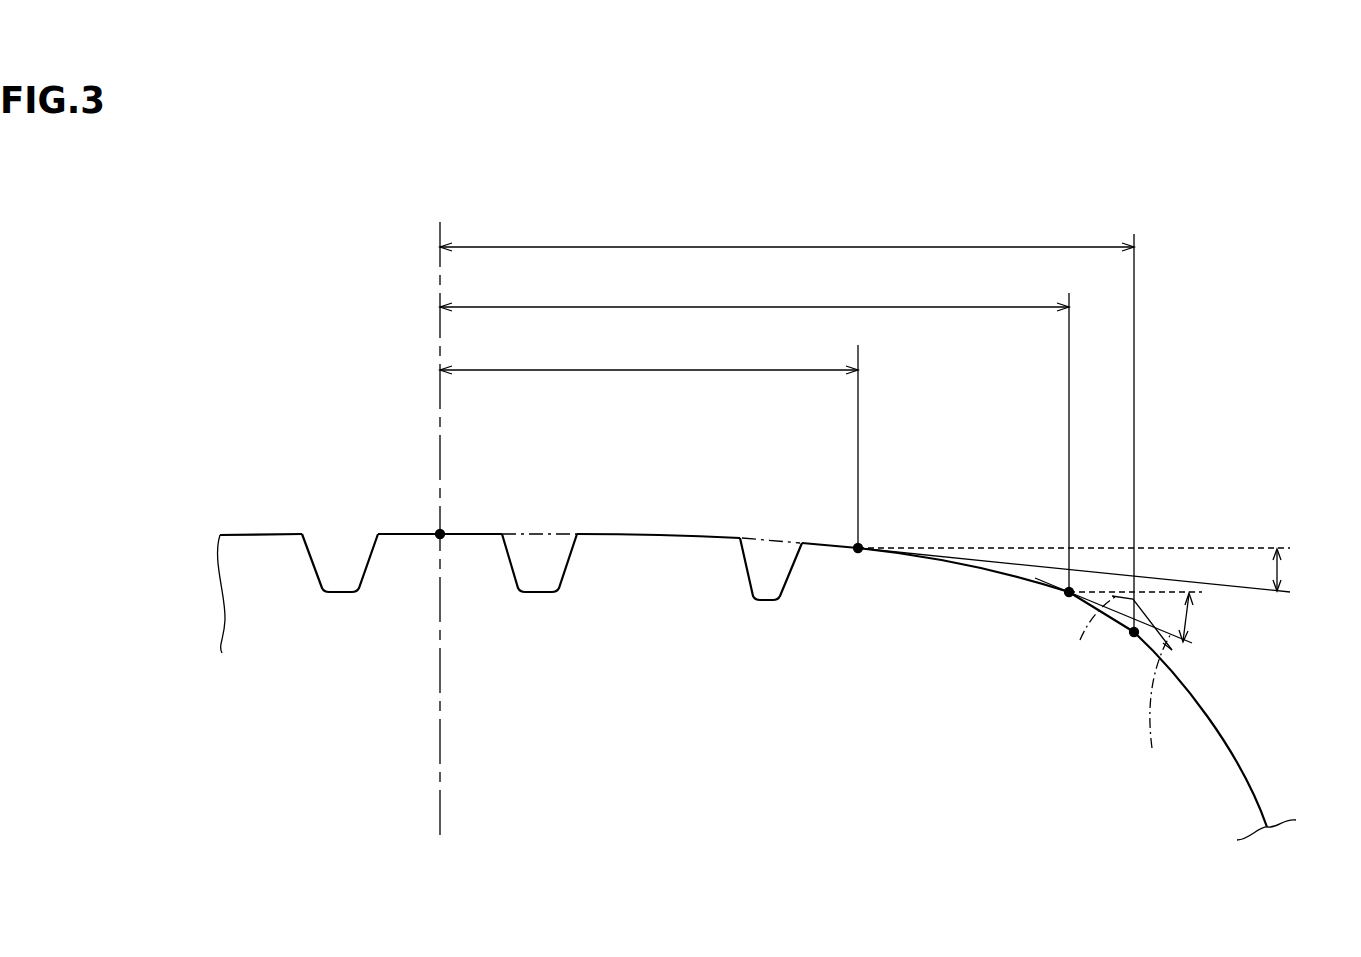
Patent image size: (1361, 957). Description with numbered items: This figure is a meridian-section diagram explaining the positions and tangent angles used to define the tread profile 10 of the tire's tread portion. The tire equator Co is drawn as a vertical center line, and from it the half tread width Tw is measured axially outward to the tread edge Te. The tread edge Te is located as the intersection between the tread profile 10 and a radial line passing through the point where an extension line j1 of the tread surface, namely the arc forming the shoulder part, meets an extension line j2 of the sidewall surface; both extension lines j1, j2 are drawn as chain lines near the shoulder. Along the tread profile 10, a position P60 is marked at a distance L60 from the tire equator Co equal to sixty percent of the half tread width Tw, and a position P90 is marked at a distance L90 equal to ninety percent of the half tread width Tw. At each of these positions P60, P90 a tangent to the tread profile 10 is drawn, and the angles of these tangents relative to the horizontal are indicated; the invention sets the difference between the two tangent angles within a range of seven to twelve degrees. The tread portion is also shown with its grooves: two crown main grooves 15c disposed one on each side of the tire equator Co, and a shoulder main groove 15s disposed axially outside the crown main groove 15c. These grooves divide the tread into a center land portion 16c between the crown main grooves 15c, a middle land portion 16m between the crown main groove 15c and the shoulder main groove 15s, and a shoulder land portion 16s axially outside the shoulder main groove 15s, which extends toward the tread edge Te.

The tread profile 10 is at (637, 535).
The crown main groove 15c is at (342, 533).
The shoulder main groove 15s is at (772, 520).
The center land portion 16c is at (467, 528).
The middle land portion 16m is at (695, 527).
The shoulder land portion 16s is at (925, 533).
The tire equator Co is at (439, 513).
The half tread width Tw is at (787, 422).
The distance L60 is at (649, 443).
The distance L90 is at (754, 435).
The position P60 is at (1062, 459).
The position P90 is at (1118, 457).
The tread edge Te is at (1130, 640).
The extension line of the tread surface j1 is at (1076, 642).
The extension line of the sidewall surface j2 is at (1157, 706).